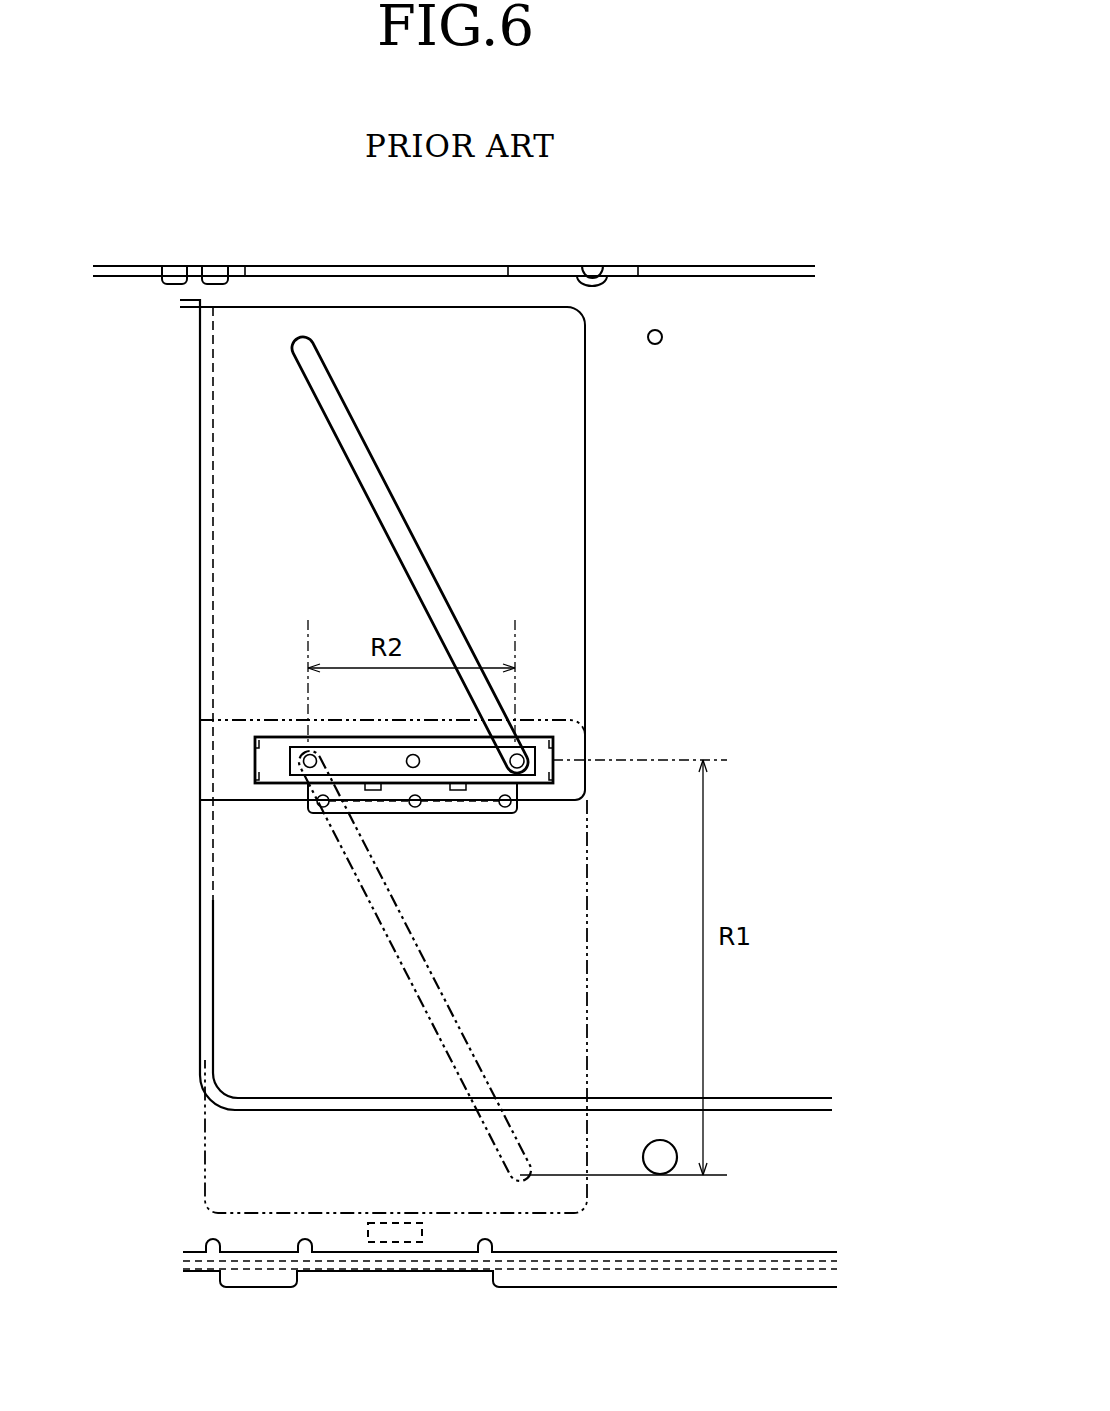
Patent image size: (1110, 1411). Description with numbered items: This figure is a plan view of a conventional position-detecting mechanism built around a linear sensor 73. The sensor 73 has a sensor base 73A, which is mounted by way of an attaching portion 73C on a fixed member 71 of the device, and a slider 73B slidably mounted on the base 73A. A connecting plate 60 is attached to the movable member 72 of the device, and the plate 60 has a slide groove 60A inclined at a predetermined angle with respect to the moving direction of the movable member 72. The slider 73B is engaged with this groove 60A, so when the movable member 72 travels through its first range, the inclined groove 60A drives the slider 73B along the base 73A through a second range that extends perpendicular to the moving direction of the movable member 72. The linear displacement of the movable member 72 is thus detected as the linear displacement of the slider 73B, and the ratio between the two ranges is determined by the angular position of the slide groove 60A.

The fixed member 71 is at (725, 308).
The movable member 72 is at (188, 390).
The connecting plate 60 is at (572, 418).
The slide groove 60A is at (343, 420).
The linear sensor 73 is at (471, 779).
The sensor base 73A is at (243, 793).
The slider 73B is at (525, 760).
The attaching portion 73C is at (470, 810).